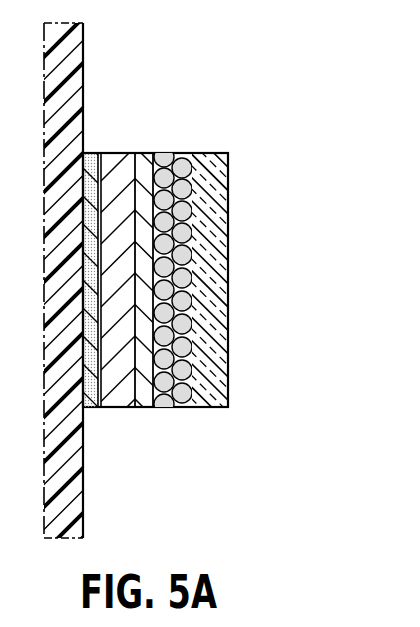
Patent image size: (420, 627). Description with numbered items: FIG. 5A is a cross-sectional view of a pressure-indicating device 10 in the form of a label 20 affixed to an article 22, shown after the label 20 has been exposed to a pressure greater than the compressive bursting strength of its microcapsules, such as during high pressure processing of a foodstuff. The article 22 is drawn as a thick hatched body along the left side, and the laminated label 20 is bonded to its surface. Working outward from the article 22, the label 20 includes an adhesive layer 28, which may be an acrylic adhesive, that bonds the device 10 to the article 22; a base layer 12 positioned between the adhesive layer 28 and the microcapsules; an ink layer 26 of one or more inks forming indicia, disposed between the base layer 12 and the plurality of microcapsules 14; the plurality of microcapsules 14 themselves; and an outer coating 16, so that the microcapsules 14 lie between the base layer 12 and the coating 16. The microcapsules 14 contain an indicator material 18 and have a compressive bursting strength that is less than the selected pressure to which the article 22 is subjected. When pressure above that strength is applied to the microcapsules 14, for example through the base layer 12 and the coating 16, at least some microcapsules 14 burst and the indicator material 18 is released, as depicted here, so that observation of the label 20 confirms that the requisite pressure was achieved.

The device 10 is at (243, 220).
The base layer 12 is at (121, 158).
The plurality of microcapsules 14 is at (212, 245).
The coating 16 is at (203, 154).
The indicator material 18 is at (180, 269).
The label 20 is at (89, 462).
The article 22 is at (81, 46).
The ink layer 26 is at (146, 408).
The adhesive layer 28 is at (99, 408).